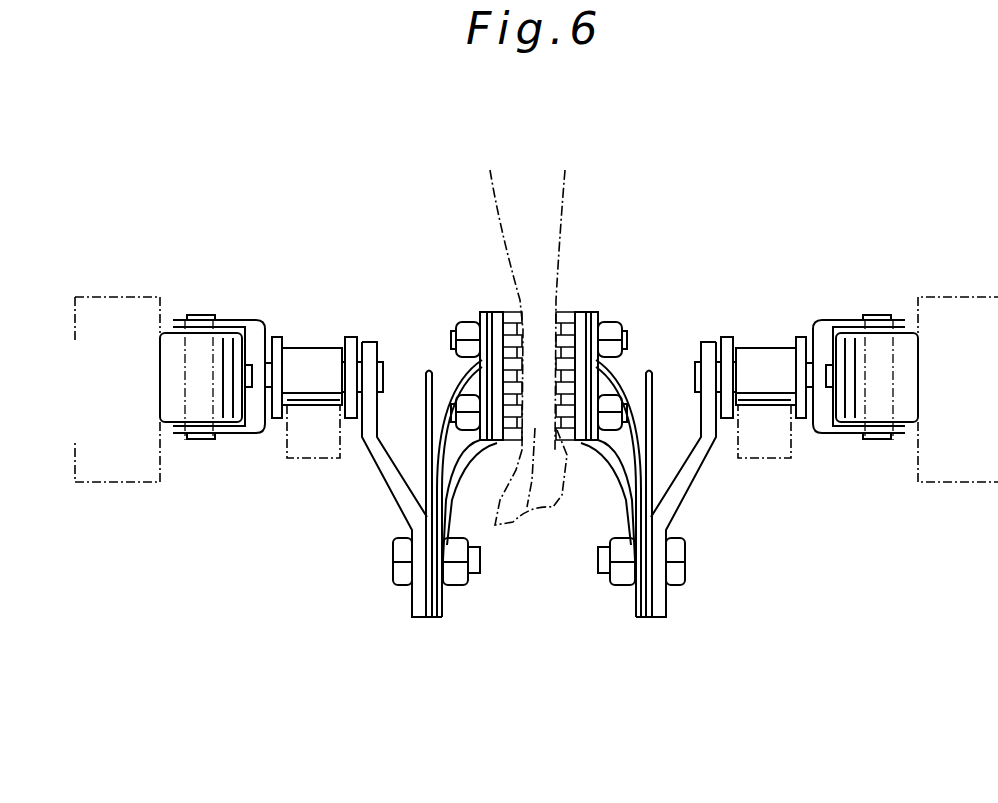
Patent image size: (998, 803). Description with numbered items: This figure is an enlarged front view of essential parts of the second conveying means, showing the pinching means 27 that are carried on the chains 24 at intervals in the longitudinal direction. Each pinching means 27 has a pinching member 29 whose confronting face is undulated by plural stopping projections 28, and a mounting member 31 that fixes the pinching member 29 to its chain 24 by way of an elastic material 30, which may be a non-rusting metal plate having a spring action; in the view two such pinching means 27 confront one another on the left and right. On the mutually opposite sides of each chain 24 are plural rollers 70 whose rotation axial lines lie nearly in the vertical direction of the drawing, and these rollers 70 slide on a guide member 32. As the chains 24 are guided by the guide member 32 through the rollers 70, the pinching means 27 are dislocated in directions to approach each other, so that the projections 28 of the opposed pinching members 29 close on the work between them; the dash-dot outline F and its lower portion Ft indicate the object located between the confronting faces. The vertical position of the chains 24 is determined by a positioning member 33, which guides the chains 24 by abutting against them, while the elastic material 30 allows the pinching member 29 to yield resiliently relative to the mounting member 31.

The chain 24 is at (312, 355).
The pinching means 27 is at (585, 307).
The stopping projection 28 is at (513, 355).
The pinching member 29 is at (482, 311).
The elastic material 30 is at (647, 490).
The mounting member 31 is at (380, 463).
The guide member 32 is at (108, 307).
The positioning member 33 is at (300, 450).
The roller 70 is at (238, 410).
The frame F is at (497, 199).
The tread Ft is at (525, 515).